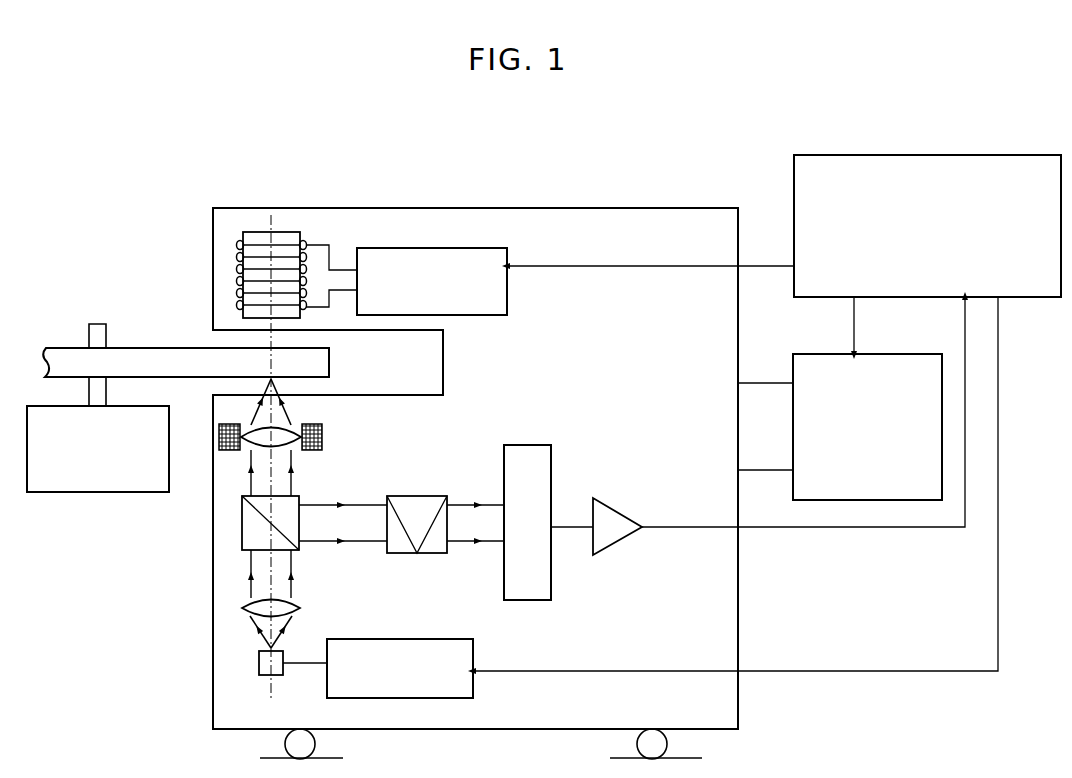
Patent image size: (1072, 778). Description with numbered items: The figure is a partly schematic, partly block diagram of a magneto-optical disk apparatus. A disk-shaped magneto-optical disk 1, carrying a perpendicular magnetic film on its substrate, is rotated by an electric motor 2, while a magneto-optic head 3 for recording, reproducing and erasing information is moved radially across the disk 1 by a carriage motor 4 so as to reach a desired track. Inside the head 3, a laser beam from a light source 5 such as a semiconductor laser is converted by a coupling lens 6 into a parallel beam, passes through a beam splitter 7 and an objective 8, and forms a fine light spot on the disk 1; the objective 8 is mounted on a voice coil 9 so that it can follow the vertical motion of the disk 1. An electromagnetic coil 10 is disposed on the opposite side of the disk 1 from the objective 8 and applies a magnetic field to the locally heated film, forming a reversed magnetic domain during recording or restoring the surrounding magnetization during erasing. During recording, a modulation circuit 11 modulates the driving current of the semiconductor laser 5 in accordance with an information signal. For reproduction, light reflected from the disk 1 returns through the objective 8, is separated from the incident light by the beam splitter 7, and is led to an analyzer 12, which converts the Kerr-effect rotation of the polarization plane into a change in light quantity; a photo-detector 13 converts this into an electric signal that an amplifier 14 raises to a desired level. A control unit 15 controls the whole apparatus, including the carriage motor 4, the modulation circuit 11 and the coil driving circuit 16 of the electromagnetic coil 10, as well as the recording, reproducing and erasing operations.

The magneto-optical disk 1 is at (150, 348).
The electric motor 2 is at (112, 492).
The magneto-optic head 3 is at (530, 208).
The carriage motor 4 is at (900, 354).
The light source 5 is at (259, 663).
The coupling lens 6 is at (300, 603).
The beam splitter 7 is at (299, 550).
The objective 8 is at (293, 427).
The voice coil 9 is at (322, 447).
The electromagnetic coil 10 is at (292, 233).
The modulation circuit 11 is at (413, 639).
The analyzer 12 is at (417, 496).
The photo-detector 13 is at (551, 497).
The amplifier 14 is at (613, 508).
The control unit 15 is at (927, 155).
The coil driving circuit 16 is at (470, 248).